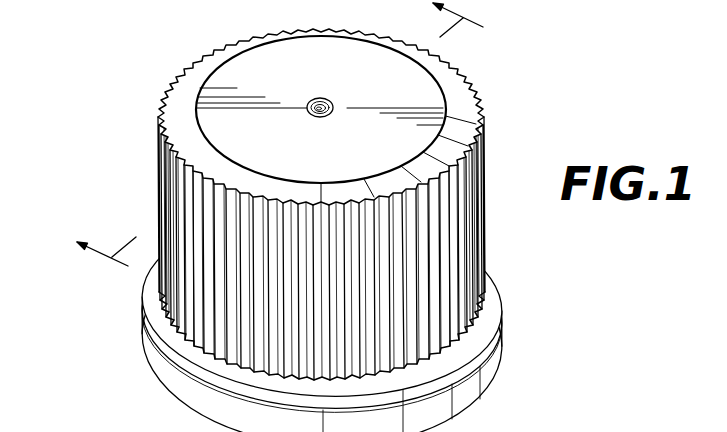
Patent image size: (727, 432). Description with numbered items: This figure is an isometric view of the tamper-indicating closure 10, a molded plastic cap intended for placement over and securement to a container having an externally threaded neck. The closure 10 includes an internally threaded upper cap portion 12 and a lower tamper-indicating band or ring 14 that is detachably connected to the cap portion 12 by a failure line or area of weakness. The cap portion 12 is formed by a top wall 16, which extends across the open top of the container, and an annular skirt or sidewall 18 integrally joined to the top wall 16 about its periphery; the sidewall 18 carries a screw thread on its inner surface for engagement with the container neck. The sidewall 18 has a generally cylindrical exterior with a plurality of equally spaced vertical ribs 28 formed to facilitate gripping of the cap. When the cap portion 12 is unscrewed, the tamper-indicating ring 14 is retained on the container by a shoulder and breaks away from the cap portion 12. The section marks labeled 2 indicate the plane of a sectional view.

The tamper-indicating closure 10 is at (334, 230).
The upper cap portion 12 is at (433, 265).
The tamper-indicating ring 14 is at (463, 392).
The top wall 16 is at (257, 72).
The annular skirt 18 is at (426, 339).
The vertical ribs 28 is at (197, 292).
The section line 2- 2 is at (271, 133).